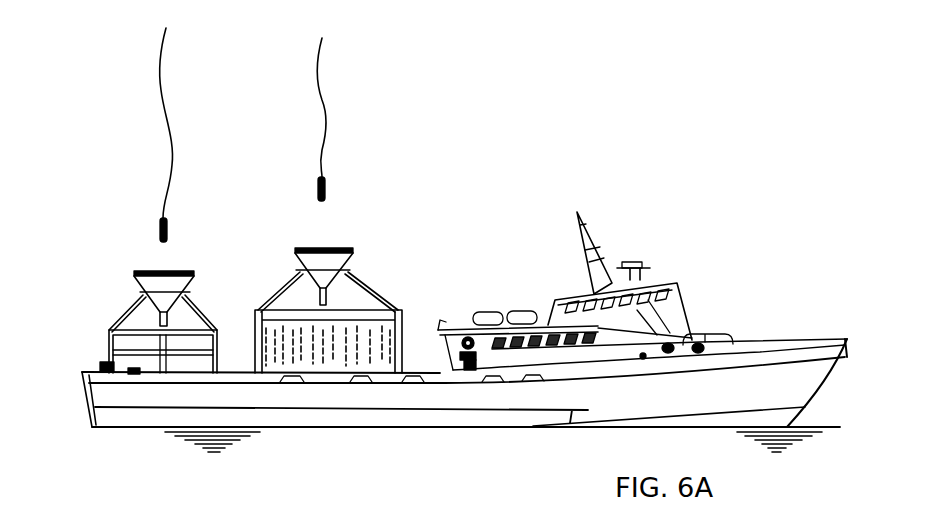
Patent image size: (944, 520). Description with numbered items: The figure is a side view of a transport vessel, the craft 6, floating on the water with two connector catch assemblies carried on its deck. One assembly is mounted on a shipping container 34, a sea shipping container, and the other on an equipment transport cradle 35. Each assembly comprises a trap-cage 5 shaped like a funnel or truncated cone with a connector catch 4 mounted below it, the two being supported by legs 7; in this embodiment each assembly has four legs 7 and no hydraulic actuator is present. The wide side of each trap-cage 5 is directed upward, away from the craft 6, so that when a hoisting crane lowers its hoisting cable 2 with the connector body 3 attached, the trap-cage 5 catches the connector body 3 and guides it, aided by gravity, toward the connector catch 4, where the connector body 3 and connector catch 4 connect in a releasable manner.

The hoisting cable 2 is at (166, 180).
The connector body 3 is at (168, 230).
The connector catch 4 is at (168, 315).
The trap-cage 5 is at (173, 274).
The craft 6 is at (757, 375).
The legs 7 is at (130, 305).
The shipping container 34 is at (108, 339).
The equipment transport cradle 35 is at (368, 328).